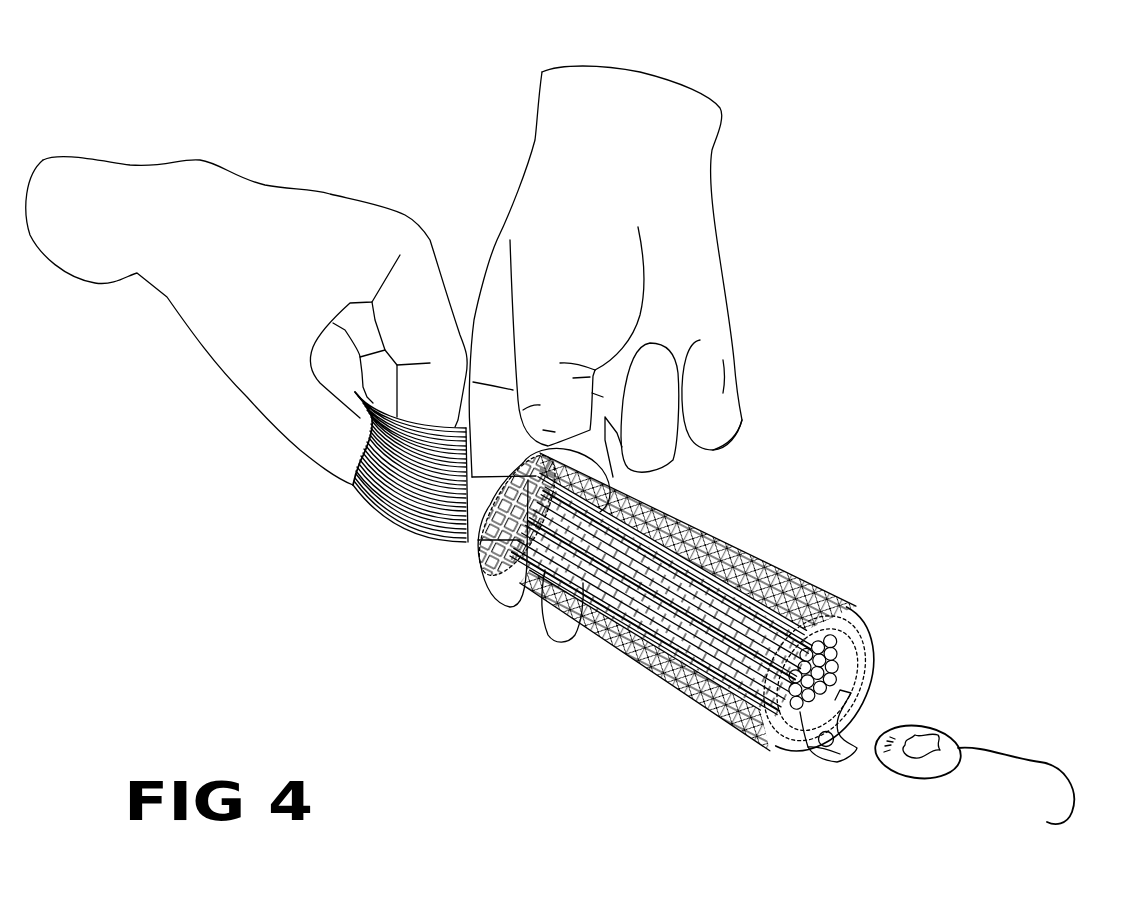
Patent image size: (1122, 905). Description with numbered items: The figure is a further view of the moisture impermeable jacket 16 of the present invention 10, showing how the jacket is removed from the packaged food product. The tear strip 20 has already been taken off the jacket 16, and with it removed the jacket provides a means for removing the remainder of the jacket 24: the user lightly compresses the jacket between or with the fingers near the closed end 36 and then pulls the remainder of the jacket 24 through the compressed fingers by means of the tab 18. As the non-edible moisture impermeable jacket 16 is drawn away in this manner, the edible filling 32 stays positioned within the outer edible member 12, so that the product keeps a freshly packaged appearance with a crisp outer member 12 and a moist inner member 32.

The present invention 10 is at (761, 594).
The outer edible member 12 is at (714, 528).
The moisture impermeable jacket 16 is at (335, 507).
The tab 18 is at (355, 494).
The tear strip 20 is at (933, 732).
The remainder of the jacket 24 is at (660, 615).
The edible filling 32 is at (820, 748).
The closed end 36 is at (370, 500).